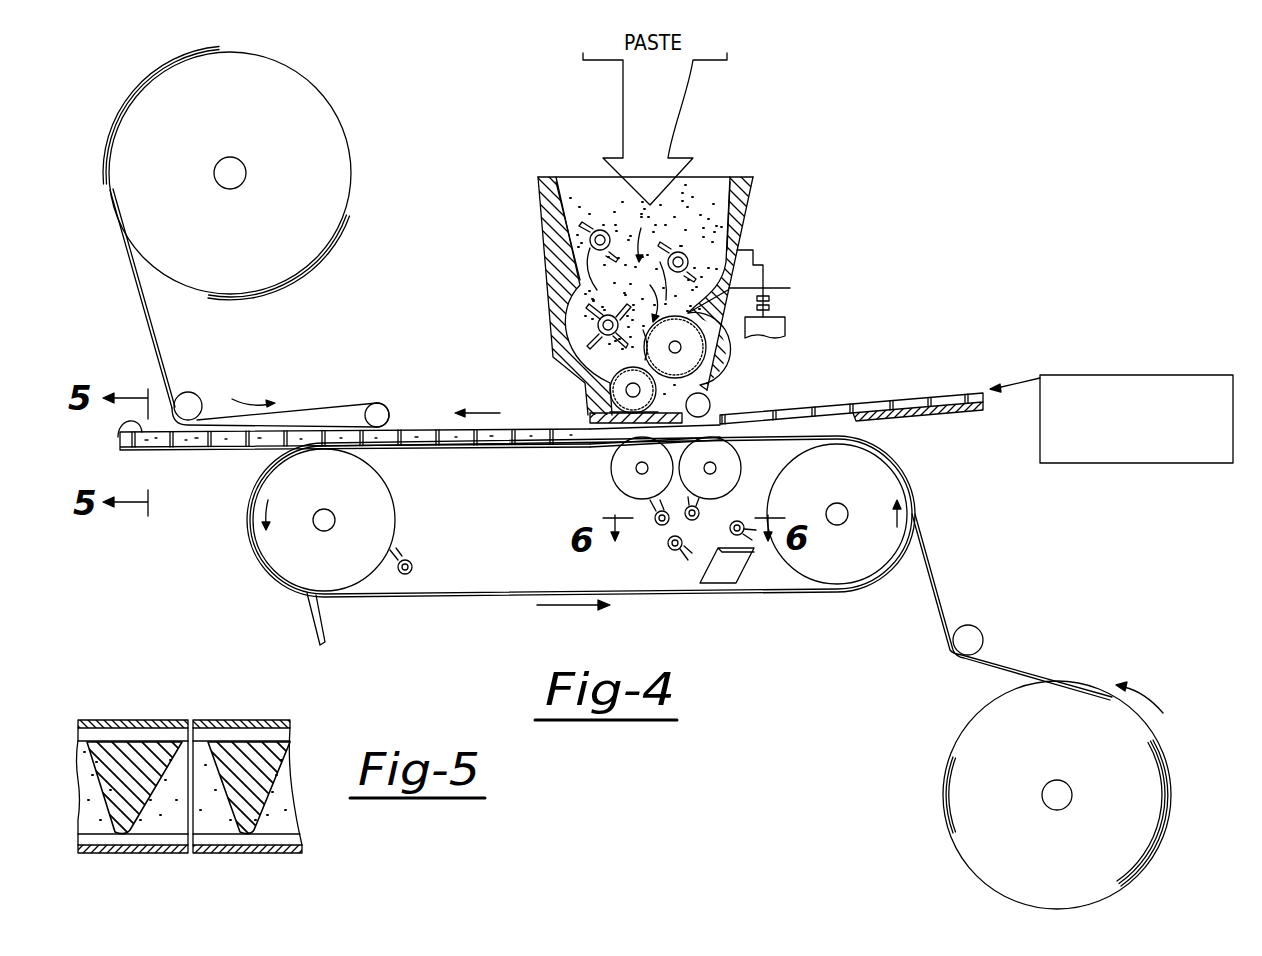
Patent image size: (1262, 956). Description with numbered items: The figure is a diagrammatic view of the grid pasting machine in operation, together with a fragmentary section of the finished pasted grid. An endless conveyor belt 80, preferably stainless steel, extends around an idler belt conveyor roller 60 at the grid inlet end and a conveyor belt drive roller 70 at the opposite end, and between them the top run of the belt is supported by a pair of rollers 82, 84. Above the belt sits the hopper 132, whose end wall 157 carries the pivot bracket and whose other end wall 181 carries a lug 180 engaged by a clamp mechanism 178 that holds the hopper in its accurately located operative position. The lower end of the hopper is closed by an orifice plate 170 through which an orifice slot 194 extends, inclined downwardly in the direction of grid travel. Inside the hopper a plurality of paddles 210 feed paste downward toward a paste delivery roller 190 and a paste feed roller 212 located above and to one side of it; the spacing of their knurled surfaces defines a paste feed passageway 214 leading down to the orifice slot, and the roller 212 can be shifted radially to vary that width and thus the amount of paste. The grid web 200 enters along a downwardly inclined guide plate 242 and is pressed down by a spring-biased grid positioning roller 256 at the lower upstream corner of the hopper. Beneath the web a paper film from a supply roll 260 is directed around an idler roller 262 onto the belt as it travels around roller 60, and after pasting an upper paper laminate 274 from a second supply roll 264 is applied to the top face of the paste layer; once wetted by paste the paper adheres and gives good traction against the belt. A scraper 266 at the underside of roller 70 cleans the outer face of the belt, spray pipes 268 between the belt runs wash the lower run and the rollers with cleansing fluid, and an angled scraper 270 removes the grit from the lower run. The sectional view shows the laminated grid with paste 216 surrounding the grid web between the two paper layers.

In FIG. 4, the belt conveyor roller 60 is at (863, 565).
In FIG. 4, the conveyor belt drive roller 70 is at (293, 573).
In FIG. 4, the endless conveyor belt 80 is at (507, 593).
In FIG. 4, the roller 82 is at (612, 470).
In FIG. 4, the roller 84 is at (736, 468).
In FIG. 4, the hopper 132 is at (755, 192).
In FIG. 4, the end wall 157 is at (548, 255).
In FIG. 4, the orifice plate 170 is at (590, 430).
In FIG. 4, the clamp mechanism 178 is at (796, 316).
In FIG. 4, the lug 180 is at (757, 263).
In FIG. 4, the end wall 181 is at (738, 223).
In FIG. 4, the paste delivery roller 190 is at (586, 384).
In FIG. 4, the orifice slot 194 is at (655, 420).
In FIG. 4, the grid web 200 is at (943, 394).
In FIG. 5, the grid web 200 is at (267, 777).
In FIG. 4, the paddles 210 is at (583, 226).
In FIG. 4, the paste feed roller 212 is at (702, 352).
In FIG. 5, the paste feed roller 212 is at (167, 853).
In FIG. 4, the paste feed passageway 214 is at (735, 295).
In FIG. 5, the paste 216 is at (287, 822).
In FIG. 4, the guide plate 242 is at (929, 406).
In FIG. 4, the grid positioning roller 256 is at (712, 405).
In FIG. 4, the supply roll 260 is at (1157, 743).
In FIG. 4, the idler roller 262 is at (980, 638).
In FIG. 4, the supply roll 264 is at (325, 203).
In FIG. 4, the scraper 266 is at (325, 630).
In FIG. 4, the spray pipes 268 is at (650, 513).
In FIG. 4, the angled scraper 270 is at (728, 580).
In FIG. 4, the upper paper laminate 274 is at (118, 437).
In FIG. 5, the upper paper laminate 274 is at (138, 722).